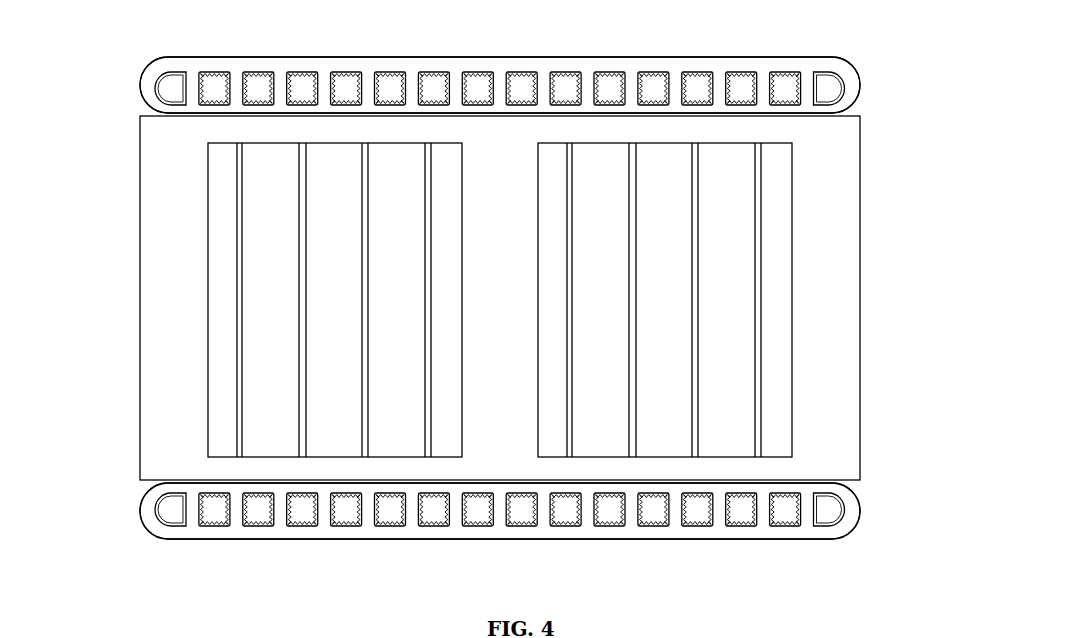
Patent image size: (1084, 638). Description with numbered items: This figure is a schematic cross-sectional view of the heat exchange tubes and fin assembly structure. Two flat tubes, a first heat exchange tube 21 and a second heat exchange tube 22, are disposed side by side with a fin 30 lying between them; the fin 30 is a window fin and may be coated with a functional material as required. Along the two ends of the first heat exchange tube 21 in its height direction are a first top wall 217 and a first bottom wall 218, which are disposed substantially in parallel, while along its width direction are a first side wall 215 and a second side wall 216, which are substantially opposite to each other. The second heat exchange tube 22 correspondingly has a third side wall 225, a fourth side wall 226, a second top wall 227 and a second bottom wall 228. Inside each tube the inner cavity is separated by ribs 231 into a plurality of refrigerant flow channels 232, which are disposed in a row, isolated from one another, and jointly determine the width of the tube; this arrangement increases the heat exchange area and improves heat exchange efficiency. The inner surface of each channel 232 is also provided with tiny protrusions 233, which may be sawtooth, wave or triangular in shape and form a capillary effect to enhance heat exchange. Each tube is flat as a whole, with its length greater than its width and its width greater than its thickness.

The first heat exchange tube 21 is at (848, 100).
The second heat exchange tube 22 is at (848, 515).
The fin 30 is at (838, 203).
The first side wall 215 is at (860, 73).
The second side wall 216 is at (140, 78).
The first top wall 217 is at (498, 57).
The first bottom wall 218 is at (580, 117).
The third side wall 225 is at (850, 532).
The fourth side wall 226 is at (138, 517).
The second top wall 227 is at (585, 480).
The second bottom wall 228 is at (707, 538).
The ribs 231 is at (236, 83).
The refrigerant flow channel 232 is at (172, 85).
The protrusions 233 is at (200, 522).